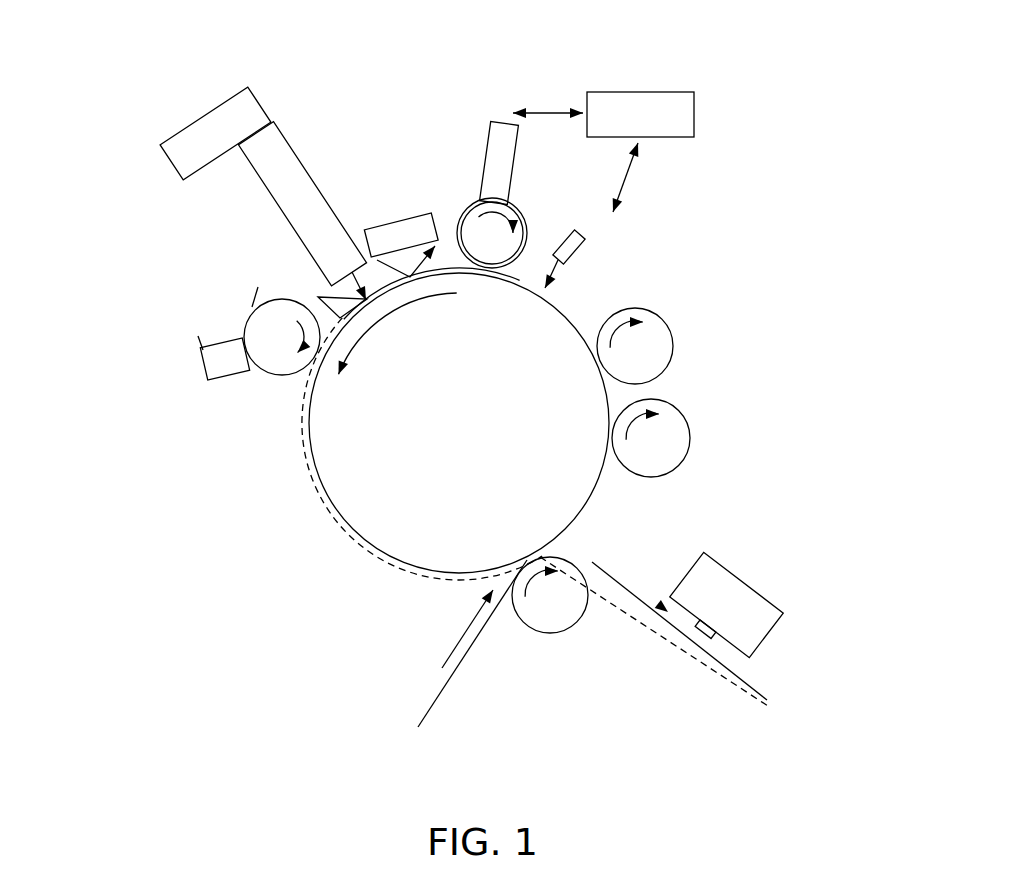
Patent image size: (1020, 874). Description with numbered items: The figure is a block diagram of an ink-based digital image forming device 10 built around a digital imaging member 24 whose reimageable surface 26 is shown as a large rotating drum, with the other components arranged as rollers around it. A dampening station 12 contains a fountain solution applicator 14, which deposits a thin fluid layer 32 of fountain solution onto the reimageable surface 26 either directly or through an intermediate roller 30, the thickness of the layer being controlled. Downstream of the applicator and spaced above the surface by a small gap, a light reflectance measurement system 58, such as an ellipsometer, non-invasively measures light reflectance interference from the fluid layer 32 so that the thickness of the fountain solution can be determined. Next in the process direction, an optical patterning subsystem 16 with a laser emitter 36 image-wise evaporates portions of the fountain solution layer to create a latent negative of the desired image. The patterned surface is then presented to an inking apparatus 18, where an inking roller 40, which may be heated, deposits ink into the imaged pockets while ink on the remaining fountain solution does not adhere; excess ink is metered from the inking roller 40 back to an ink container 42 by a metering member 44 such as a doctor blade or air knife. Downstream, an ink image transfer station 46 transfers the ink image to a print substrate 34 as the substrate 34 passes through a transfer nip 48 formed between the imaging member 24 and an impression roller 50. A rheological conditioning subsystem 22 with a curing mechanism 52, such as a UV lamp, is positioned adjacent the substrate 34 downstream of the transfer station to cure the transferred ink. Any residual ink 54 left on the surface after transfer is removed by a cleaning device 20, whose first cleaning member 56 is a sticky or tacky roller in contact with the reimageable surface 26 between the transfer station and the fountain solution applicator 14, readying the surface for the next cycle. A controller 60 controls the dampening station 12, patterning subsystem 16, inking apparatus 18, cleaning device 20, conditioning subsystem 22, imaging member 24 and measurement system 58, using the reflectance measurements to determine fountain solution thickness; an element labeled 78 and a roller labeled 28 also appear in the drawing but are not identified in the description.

The digital image forming device 10 is at (727, 157).
The dampening station 12 is at (528, 162).
The fountain solution applicator 14 is at (506, 122).
The optical patterning subsystem 16 is at (263, 176).
The inking apparatus 18 is at (218, 342).
The cleaning device 20 is at (695, 392).
The rheological conditioning subsystem 22 is at (742, 616).
The digital imaging member 24 is at (333, 489).
The reimageable surface 26 is at (565, 323).
The roller 28 is at (672, 345).
The intermediate roller 30 is at (480, 205).
The fluid layer 32 is at (452, 268).
The print substrate 34 is at (442, 692).
The laser emitter 36 is at (287, 137).
The inking roller 40 is at (285, 377).
The ink container 42 is at (200, 360).
The metering member 44 is at (255, 300).
The ink image transfer station 46 is at (460, 592).
The transfer nip 48 is at (553, 550).
The impression roller 50 is at (572, 627).
The curing mechanism 52 is at (710, 643).
The residual ink 54 is at (579, 525).
The first cleaning member 56 is at (690, 437).
The light reflectance measurement system 58 is at (398, 223).
The controller 60 is at (640, 92).
The sensor 78 is at (583, 240).